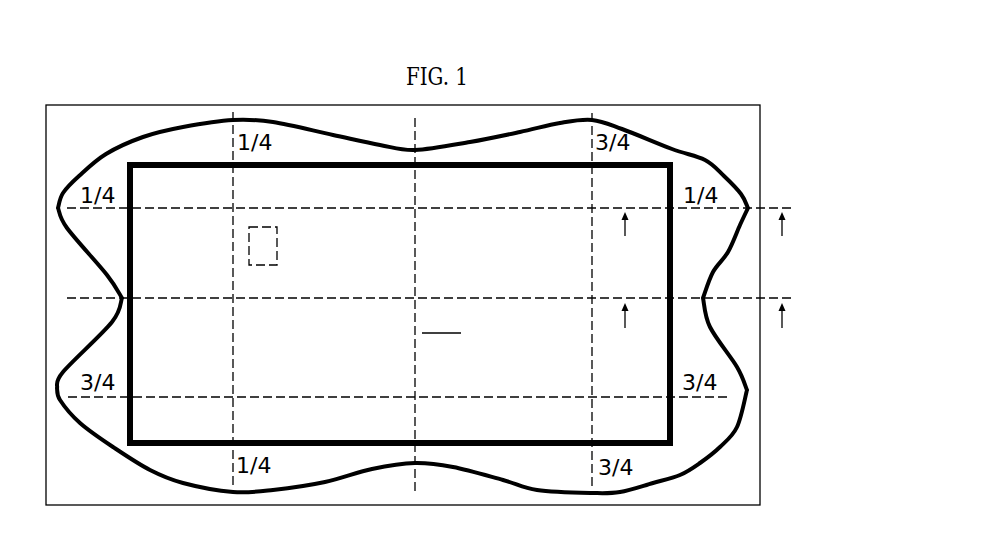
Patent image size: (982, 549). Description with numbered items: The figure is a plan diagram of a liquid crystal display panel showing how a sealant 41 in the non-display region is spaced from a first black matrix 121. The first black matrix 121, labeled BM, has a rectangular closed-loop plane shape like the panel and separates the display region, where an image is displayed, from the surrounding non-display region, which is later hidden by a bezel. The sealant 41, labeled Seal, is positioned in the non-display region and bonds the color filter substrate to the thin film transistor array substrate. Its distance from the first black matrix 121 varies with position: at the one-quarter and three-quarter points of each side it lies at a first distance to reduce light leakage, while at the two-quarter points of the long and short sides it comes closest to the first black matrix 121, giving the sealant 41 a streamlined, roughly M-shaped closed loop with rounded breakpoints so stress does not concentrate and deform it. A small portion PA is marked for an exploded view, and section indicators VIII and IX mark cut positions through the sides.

The first black matrix 121 is at (481, 304).
The sealant 41 is at (437, 308).
The black matrix BM is at (400, 304).
The portion PA is at (277, 240).
The seal Seal is at (402, 308).
The section line VIII is at (703, 239).
The section line IX is at (704, 330).